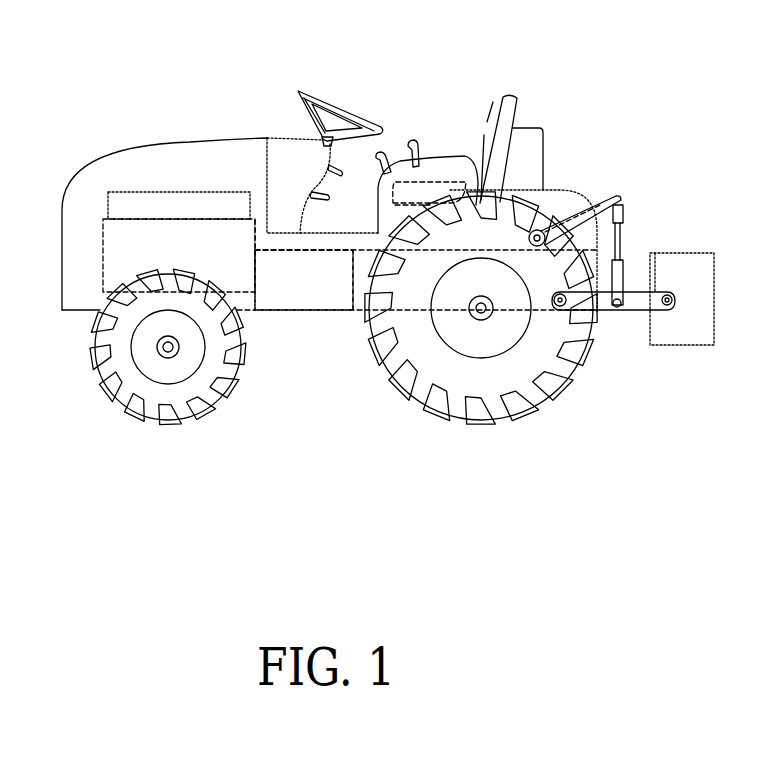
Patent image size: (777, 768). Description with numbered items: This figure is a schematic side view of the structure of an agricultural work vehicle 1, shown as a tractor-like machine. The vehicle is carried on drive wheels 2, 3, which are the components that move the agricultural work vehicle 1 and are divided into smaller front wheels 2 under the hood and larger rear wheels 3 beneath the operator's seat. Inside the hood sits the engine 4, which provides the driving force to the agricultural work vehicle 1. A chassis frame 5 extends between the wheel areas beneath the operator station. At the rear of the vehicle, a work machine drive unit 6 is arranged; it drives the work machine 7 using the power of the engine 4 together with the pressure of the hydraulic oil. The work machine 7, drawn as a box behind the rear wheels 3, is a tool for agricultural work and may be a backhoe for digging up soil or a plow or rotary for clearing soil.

The agricultural work vehicle 1 is at (173, 103).
The front wheels 2 is at (130, 407).
The rear wheels 3 is at (538, 397).
The engine 4 is at (117, 247).
The chassis frame 5 is at (292, 310).
The work machine drive unit 6 is at (623, 217).
The work machine 7 is at (677, 267).